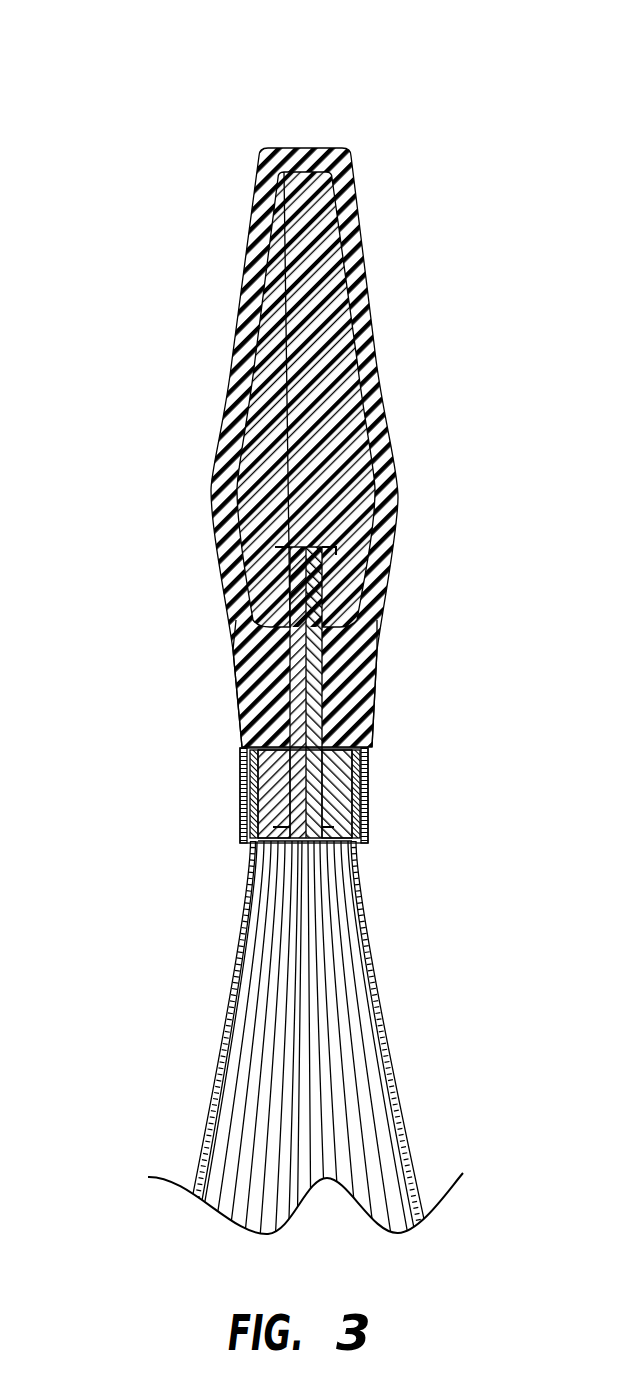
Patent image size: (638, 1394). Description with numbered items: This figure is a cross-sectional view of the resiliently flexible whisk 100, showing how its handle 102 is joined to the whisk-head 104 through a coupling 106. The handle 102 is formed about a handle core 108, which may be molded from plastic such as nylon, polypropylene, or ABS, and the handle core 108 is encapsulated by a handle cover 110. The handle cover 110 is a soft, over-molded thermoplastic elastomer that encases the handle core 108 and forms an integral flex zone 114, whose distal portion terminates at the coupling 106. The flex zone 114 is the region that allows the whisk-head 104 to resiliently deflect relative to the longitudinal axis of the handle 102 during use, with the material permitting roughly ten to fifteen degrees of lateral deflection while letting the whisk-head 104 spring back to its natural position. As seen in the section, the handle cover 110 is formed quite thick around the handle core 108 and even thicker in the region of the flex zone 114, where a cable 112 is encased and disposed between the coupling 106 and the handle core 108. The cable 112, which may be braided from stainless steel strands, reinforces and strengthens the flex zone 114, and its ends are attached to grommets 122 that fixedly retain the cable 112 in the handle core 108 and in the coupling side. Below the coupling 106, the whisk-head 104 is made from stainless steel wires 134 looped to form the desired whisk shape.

The whisk 100 is at (202, 88).
The handle 102 is at (418, 410).
The whisk-head 104 is at (420, 999).
The coupling 106 is at (228, 733).
The handle core 108 is at (337, 322).
The handle cover 110 is at (376, 370).
The cable 112 is at (300, 690).
The flex zone 114 is at (385, 620).
The grommets 122 is at (377, 497).
The wires 134 is at (376, 950).